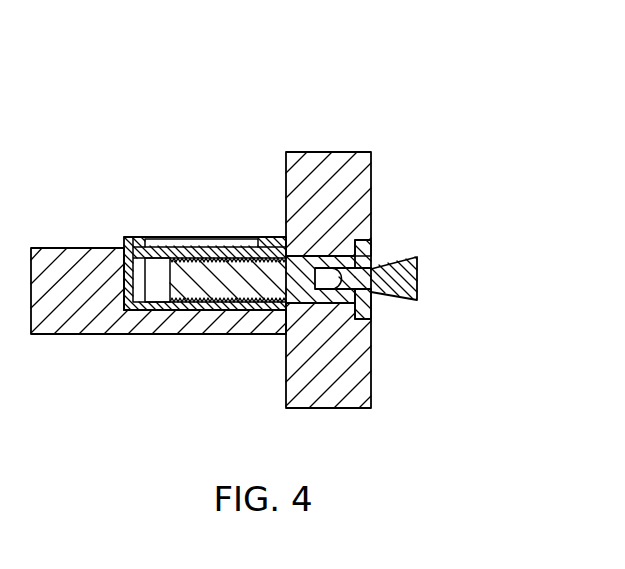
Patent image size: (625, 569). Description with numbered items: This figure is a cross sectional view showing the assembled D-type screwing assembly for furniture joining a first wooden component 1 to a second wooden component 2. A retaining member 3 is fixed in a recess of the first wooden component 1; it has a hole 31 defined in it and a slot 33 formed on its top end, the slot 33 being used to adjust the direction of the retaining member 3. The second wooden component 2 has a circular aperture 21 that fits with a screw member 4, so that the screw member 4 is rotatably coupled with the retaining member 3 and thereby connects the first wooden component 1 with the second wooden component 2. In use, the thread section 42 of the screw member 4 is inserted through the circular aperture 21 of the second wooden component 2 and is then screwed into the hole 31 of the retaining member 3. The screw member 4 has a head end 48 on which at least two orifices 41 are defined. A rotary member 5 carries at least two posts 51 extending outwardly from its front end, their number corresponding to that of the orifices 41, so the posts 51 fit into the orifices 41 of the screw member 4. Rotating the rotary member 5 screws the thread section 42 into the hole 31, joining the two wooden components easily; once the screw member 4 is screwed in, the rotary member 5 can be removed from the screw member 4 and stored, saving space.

The first wooden component 1 is at (92, 308).
The second wooden component 2 is at (330, 170).
The circular aperture 21 is at (313, 255).
The retaining member 3 is at (268, 237).
The hole 31 is at (156, 282).
The slot 33 is at (163, 238).
The screw member 4 is at (441, 187).
The orifices 41 is at (333, 257).
The thread section 42 is at (228, 275).
The head end 48 is at (367, 254).
The rotary member 5 is at (403, 282).
The posts 51 is at (372, 300).